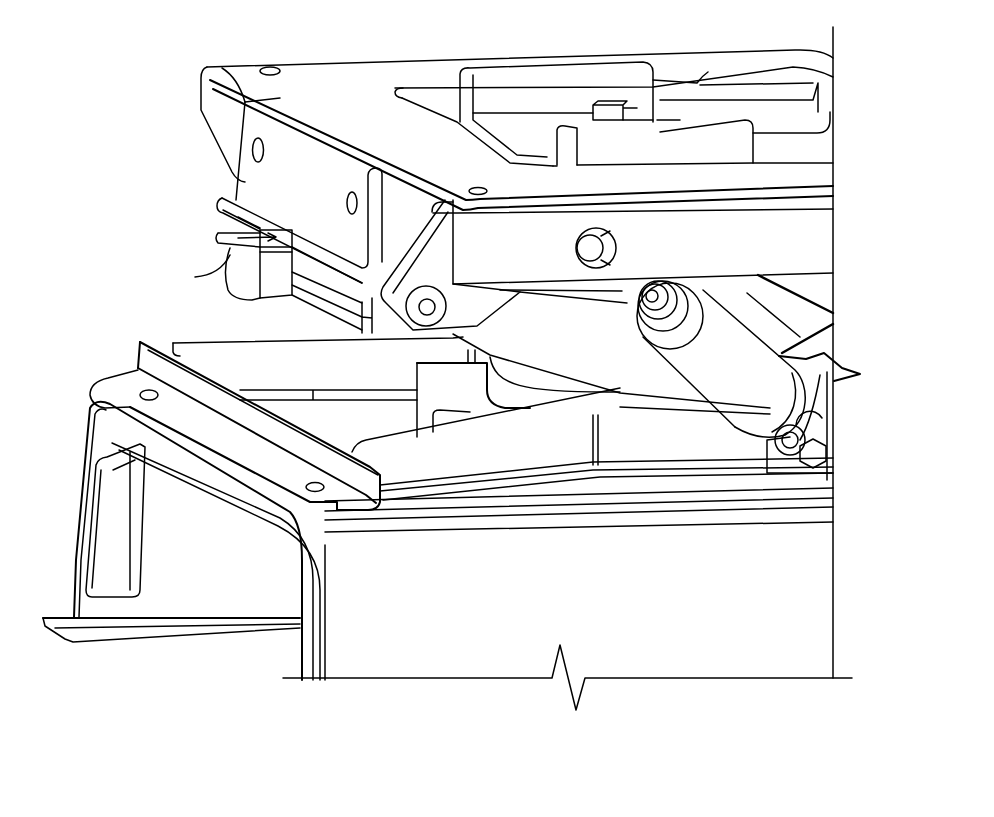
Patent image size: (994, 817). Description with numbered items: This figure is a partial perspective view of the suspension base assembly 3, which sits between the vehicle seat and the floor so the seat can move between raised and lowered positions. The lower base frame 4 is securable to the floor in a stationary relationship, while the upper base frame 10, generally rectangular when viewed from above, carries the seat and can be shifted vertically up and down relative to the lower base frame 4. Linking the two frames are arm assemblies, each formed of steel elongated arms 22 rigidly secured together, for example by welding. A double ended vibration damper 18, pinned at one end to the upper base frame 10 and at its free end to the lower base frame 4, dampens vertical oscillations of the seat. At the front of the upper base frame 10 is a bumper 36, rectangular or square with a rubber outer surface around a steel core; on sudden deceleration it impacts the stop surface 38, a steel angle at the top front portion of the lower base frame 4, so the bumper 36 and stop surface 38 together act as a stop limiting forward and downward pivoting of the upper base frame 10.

The suspension base assembly 3 is at (178, 56).
The upper base frame 10 is at (220, 122).
The bumper 36 is at (237, 262).
The stop surface 38 is at (173, 408).
The elongated arm 22 is at (594, 357).
The double ended vibration damper 18 is at (738, 400).
The lower base frame 4 is at (307, 652).